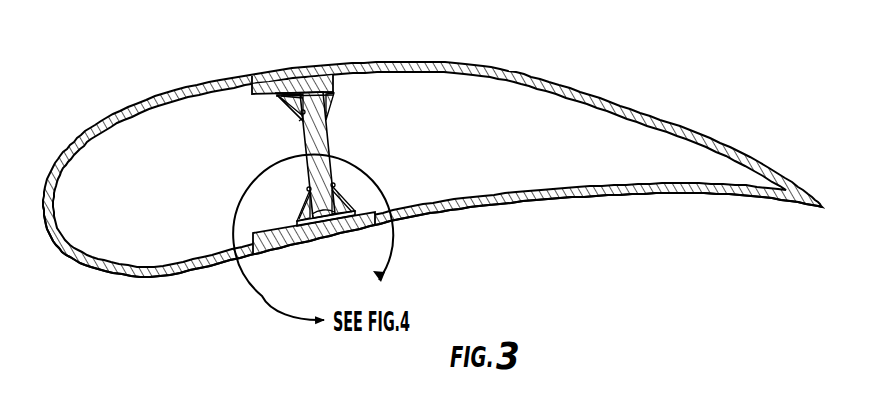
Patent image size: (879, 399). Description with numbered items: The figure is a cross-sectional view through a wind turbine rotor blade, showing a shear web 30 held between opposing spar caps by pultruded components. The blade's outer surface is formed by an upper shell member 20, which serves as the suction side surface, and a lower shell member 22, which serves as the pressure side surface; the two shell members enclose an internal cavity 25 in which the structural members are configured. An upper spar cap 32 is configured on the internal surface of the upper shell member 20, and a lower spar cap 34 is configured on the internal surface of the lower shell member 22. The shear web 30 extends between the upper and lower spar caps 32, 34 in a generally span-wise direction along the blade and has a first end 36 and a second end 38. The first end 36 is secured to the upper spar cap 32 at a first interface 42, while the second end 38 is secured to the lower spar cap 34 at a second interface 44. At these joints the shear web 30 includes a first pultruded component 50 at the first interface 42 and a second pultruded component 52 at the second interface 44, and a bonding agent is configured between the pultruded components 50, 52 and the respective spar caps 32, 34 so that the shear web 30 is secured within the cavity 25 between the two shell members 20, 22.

The upper shell member 20 is at (527, 75).
The lower shell member 22 is at (495, 205).
The internal cavity 25 is at (494, 140).
The shear web 30 is at (323, 138).
The upper spar cap 32 is at (262, 96).
The lower spar cap 34 is at (367, 207).
The first end 36 is at (310, 90).
The second end 38 is at (325, 216).
The first interface 42 is at (335, 103).
The second interface 44 is at (286, 198).
The first pultruded component 50 is at (283, 108).
The second pultruded component 52 is at (336, 193).